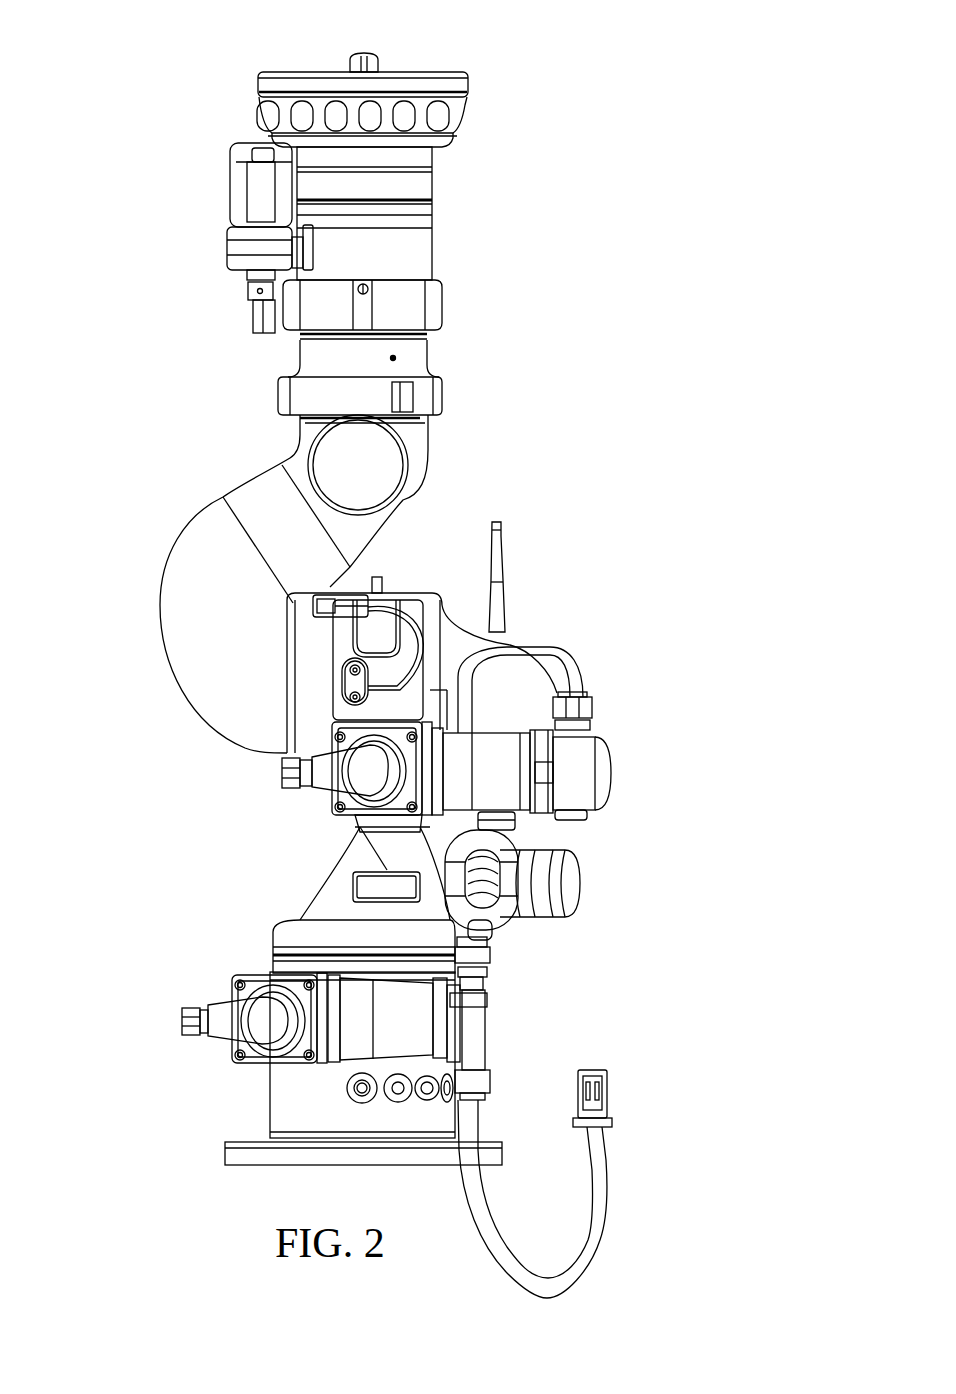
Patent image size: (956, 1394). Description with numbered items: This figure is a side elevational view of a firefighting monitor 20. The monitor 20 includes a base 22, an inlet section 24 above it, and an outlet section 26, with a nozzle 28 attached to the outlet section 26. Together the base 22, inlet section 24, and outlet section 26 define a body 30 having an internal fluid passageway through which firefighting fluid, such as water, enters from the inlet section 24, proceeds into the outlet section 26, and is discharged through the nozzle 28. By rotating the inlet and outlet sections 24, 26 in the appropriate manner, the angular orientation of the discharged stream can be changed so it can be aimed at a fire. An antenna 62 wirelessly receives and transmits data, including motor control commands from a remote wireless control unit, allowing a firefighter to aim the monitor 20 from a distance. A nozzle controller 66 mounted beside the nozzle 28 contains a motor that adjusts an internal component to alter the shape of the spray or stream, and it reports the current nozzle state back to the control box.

The firefighting monitor 20 is at (552, 103).
The base 22 is at (292, 1105).
The inlet section 24 is at (328, 880).
The outlet section 26 is at (190, 612).
The nozzle 28 is at (423, 245).
The body 30 is at (628, 692).
The antenna 62 is at (497, 608).
The nozzle controller 66 is at (225, 263).